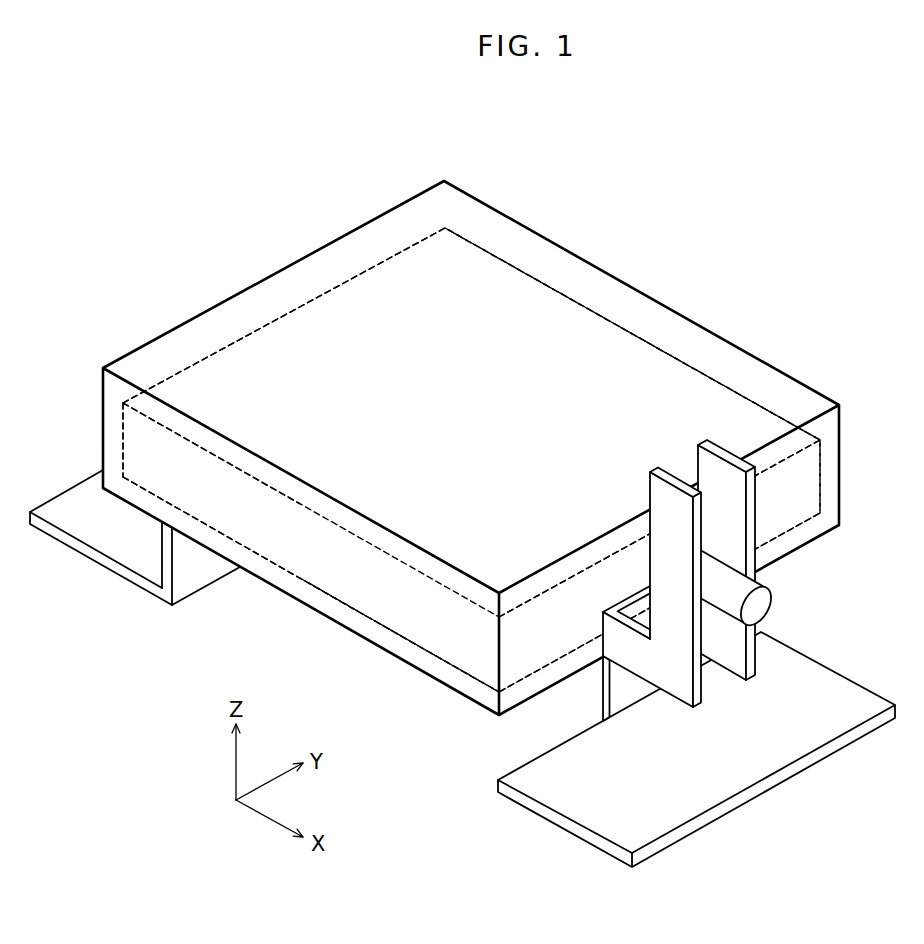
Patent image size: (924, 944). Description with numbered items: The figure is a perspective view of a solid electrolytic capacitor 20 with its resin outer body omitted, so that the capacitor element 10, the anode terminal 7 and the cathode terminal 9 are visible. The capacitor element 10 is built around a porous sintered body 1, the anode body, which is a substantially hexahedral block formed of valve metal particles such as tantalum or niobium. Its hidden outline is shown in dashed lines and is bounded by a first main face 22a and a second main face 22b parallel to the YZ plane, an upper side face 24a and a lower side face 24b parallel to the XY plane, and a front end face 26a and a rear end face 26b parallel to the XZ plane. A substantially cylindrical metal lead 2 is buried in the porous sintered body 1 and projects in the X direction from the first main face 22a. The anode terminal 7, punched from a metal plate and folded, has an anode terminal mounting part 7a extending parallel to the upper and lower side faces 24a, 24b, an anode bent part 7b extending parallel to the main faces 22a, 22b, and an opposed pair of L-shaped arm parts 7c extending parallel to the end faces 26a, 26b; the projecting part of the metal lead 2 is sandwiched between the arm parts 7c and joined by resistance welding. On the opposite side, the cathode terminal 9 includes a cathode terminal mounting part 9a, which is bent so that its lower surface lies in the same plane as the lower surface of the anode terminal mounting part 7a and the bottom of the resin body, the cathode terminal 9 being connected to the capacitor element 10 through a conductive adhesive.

The porous sintered body 1 is at (518, 433).
The metal lead 2 is at (758, 603).
The anode terminal 7 is at (657, 655).
The anode terminal mounting part 7a is at (745, 773).
The anode bent part 7b is at (620, 680).
The arm parts 7c is at (700, 682).
The cathode terminal 9 is at (135, 540).
The cathode terminal mounting part 9a is at (75, 500).
The capacitor element 10 is at (508, 433).
The solid electrolytic capacitor 20 is at (194, 281).
The first main face 22a is at (800, 488).
The second main face 22b is at (424, 238).
The upper side face 24a is at (268, 472).
The lower side face 24b is at (340, 603).
The front end face 26a is at (417, 620).
The rear end face 26b is at (748, 398).